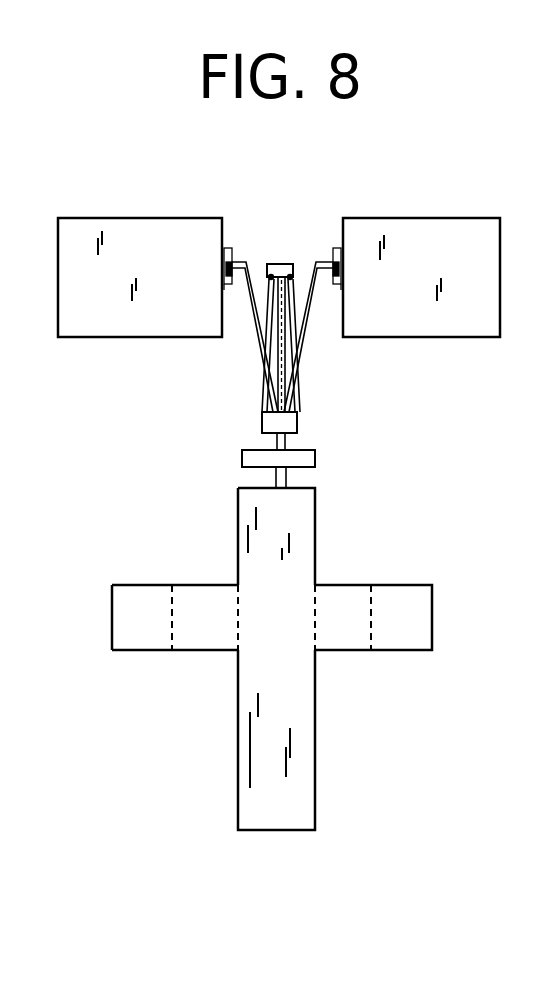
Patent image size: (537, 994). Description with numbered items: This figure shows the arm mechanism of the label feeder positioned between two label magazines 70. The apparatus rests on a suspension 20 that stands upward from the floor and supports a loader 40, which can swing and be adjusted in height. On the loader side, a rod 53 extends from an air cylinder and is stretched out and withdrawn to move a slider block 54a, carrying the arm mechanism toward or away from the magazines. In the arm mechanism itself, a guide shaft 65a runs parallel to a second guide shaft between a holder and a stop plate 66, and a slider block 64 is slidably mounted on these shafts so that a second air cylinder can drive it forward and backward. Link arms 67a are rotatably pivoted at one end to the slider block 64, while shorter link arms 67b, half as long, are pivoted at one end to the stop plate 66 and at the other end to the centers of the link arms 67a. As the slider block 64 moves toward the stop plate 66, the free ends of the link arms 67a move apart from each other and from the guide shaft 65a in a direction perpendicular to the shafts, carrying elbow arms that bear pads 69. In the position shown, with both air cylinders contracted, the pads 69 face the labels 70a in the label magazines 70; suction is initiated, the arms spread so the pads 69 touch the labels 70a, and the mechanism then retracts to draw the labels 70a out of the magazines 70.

The suspension 20 is at (433, 614).
The loader 40 is at (305, 537).
The rod 53 is at (317, 483).
The slider block 54a is at (317, 457).
The slider block 64 is at (297, 418).
The guide shaft 65a is at (258, 405).
The stop plate 66 is at (283, 260).
The link arms 67a is at (267, 365).
The link arms 67b is at (268, 340).
The pads 69 is at (233, 250).
The label magazines 70 is at (134, 229).
The labels 70a is at (231, 289).